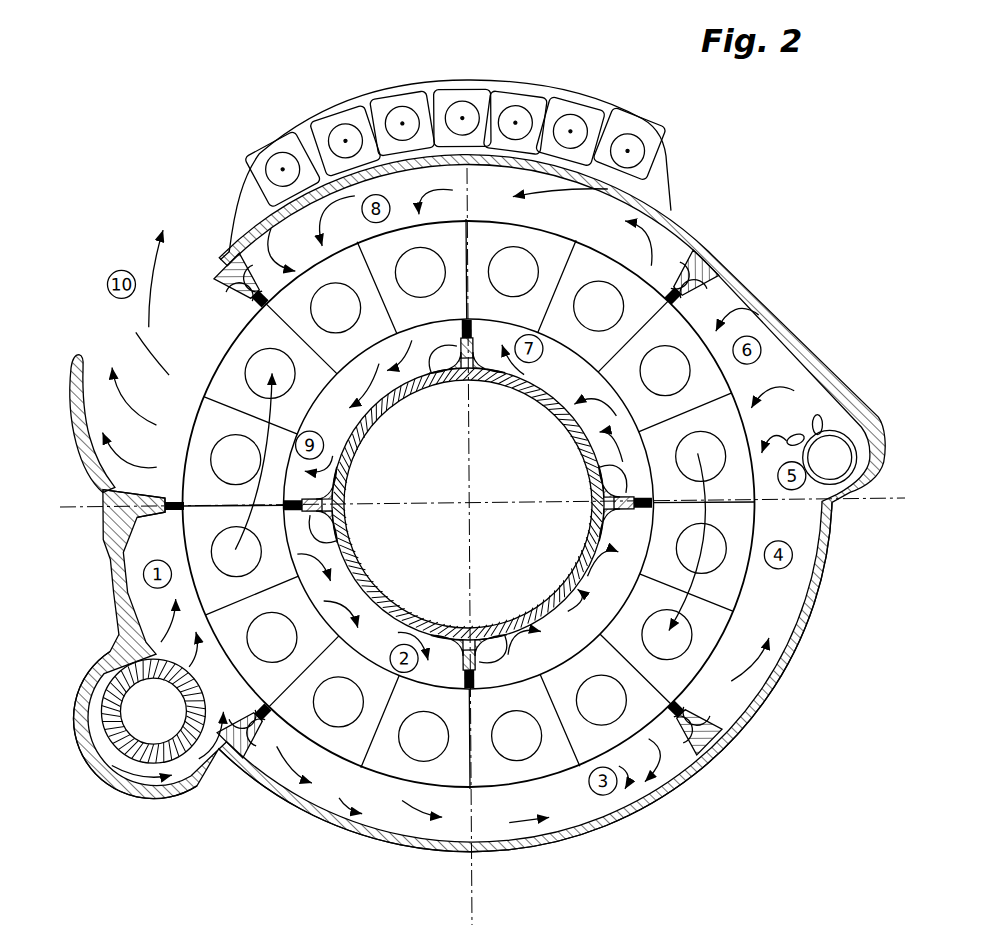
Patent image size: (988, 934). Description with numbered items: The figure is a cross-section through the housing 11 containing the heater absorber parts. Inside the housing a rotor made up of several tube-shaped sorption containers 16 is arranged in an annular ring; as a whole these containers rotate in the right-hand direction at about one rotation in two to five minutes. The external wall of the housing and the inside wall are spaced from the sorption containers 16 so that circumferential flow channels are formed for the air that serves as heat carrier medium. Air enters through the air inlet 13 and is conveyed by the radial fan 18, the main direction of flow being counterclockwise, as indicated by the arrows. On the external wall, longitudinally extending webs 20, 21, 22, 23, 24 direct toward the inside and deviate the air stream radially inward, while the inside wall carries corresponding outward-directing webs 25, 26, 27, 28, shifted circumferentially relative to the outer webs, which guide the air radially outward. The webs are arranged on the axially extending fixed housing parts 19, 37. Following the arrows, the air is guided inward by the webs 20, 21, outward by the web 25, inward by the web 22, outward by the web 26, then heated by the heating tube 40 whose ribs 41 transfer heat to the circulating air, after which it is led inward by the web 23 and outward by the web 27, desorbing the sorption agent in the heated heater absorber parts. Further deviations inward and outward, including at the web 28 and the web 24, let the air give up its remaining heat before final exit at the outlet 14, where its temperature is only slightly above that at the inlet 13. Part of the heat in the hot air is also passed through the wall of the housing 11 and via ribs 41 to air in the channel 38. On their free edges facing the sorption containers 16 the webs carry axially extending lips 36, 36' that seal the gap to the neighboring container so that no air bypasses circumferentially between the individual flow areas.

The housing 11 is at (812, 332).
The air inlet 13 is at (85, 768).
The outlet 14 is at (100, 367).
The sorption containers 16 is at (535, 752).
The radial fan 18 is at (125, 662).
The fixed housing part 19 is at (545, 410).
The web 20 is at (112, 562).
The web 21 is at (260, 745).
The web 22 is at (685, 740).
The web 23 is at (693, 265).
The web 24 is at (236, 288).
The web 25 is at (462, 650).
The web 26 is at (600, 538).
The web 27 is at (446, 370).
The web 28 is at (342, 532).
The lip 36 is at (567, 573).
The lip 36' is at (706, 926).
The fixed housing part 37 is at (398, 850).
The channel 38 is at (487, 97).
The heating tube 40 is at (842, 452).
The ribs 41 is at (435, 128).